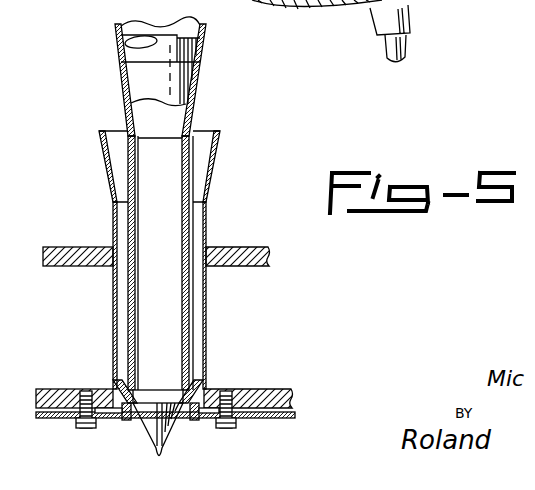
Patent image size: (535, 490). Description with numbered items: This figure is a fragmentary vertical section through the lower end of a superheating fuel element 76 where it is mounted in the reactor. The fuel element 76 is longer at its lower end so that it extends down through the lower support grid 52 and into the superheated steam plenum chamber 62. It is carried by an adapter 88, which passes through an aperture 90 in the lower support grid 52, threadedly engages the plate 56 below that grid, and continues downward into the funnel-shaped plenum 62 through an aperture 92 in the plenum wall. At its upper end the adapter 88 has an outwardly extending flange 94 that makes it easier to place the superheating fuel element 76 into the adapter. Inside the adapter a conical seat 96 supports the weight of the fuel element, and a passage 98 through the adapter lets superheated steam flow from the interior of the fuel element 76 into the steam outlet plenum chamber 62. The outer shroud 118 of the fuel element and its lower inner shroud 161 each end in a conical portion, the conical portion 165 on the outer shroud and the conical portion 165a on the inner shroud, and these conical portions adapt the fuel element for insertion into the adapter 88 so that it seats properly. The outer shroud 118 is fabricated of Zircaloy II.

The second grid 52 is at (261, 263).
The plate 56 is at (276, 393).
The funnel-shaped plenum 62 is at (270, 418).
The superheating fuel element 76 is at (113, 62).
The adapter 88 is at (207, 215).
The aperture 90 is at (195, 266).
The aperture 92 is at (188, 422).
The outwardly extending flange 94 is at (209, 159).
The conical seat 96 is at (203, 378).
The passage 98 is at (130, 423).
The outer shroud 118 is at (126, 32).
The lower inner shroud 161 is at (140, 80).
The conical portion 165 is at (203, 69).
The conical portion 165a is at (183, 90).